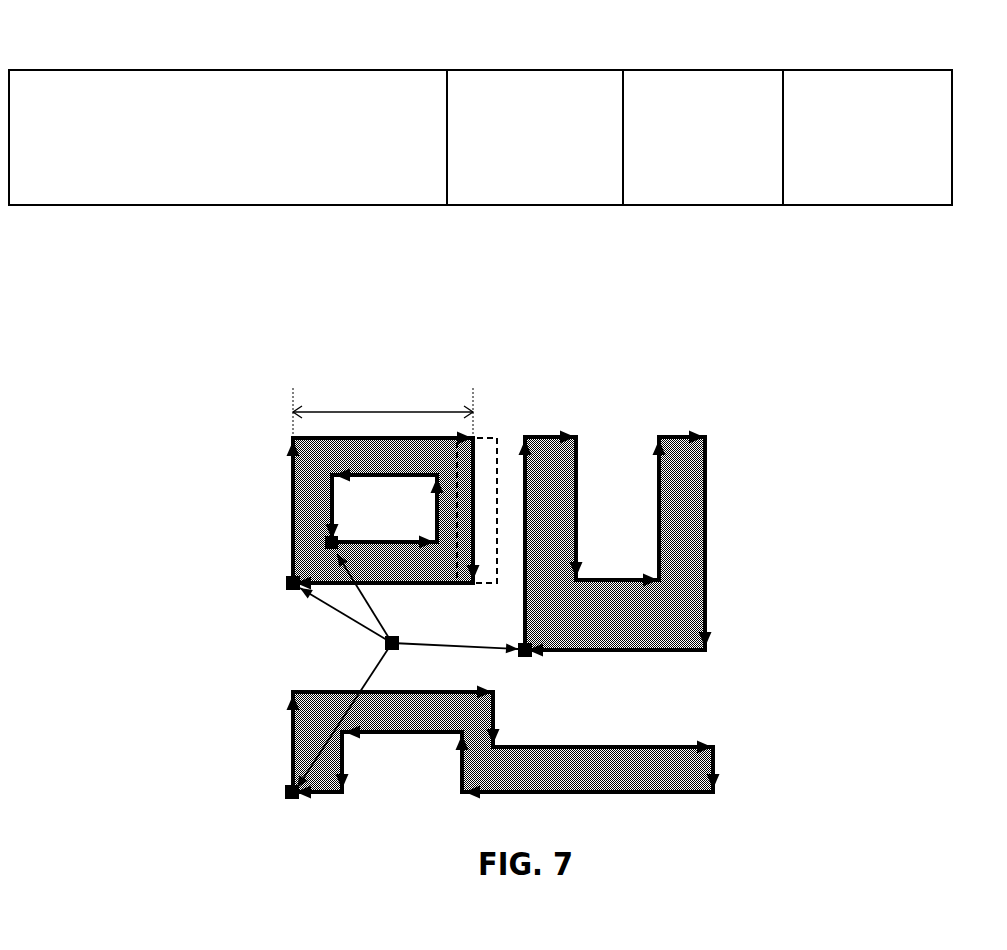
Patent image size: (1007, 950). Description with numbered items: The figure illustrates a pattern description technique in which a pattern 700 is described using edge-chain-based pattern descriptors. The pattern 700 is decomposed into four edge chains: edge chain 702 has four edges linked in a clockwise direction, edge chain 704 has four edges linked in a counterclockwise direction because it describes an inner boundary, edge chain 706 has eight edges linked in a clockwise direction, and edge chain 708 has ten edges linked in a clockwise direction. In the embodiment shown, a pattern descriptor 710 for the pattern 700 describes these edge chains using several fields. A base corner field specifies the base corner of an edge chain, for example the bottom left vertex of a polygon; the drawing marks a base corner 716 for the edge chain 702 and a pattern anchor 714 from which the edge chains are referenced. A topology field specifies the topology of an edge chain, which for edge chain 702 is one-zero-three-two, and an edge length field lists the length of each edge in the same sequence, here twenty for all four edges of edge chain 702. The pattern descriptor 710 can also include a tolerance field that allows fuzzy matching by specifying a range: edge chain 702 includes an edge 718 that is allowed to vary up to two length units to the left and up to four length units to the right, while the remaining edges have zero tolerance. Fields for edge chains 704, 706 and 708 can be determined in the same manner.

The pattern 700 is at (565, 355).
The edge chain 702 is at (293, 530).
The edge chain 704 is at (382, 548).
The edge chain 706 is at (705, 527).
The edge chain 708 is at (540, 747).
The pattern descriptor 710 is at (480, 120).
The pattern anchor 714 is at (385, 645).
The base corner 716 is at (290, 578).
The edge 718 is at (475, 495).